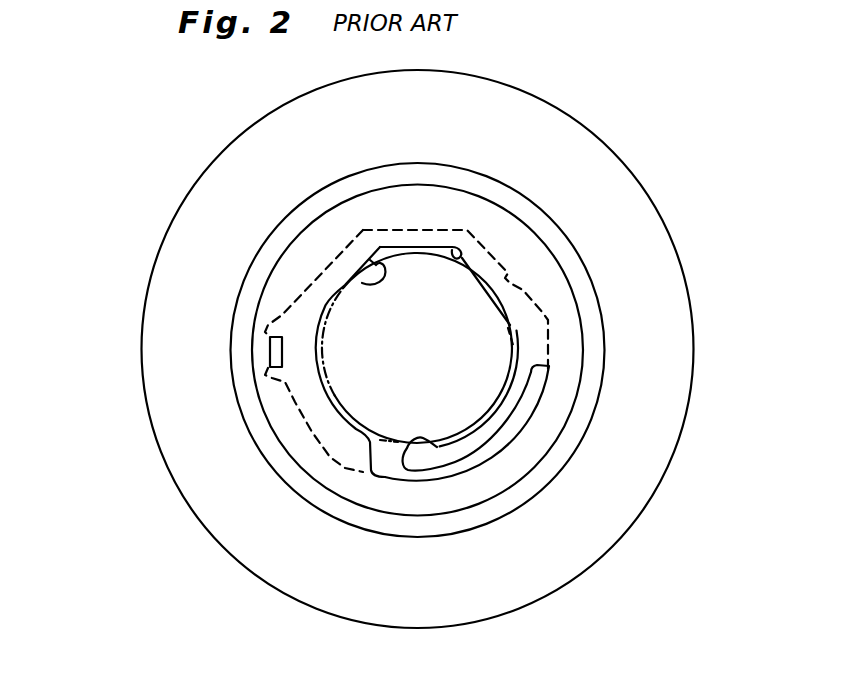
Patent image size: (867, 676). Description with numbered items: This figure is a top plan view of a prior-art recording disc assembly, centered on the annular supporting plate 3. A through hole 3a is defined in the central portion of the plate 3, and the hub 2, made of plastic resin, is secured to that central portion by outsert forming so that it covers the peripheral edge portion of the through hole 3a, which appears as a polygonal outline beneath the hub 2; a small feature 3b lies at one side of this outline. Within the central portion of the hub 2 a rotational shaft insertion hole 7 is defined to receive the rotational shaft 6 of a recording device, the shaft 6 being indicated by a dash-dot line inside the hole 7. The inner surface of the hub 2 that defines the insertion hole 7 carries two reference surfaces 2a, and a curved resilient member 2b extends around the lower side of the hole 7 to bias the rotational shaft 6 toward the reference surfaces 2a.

The hub 2 is at (484, 215).
The reference surfaces 2a is at (383, 284).
The resilient member 2b is at (453, 460).
The annular supporting plate 3 is at (652, 442).
The through hole 3a is at (515, 285).
The stopper projection 3b is at (270, 352).
The rotational shaft 6 is at (395, 442).
The rotational shaft insertion hole 7 is at (515, 330).